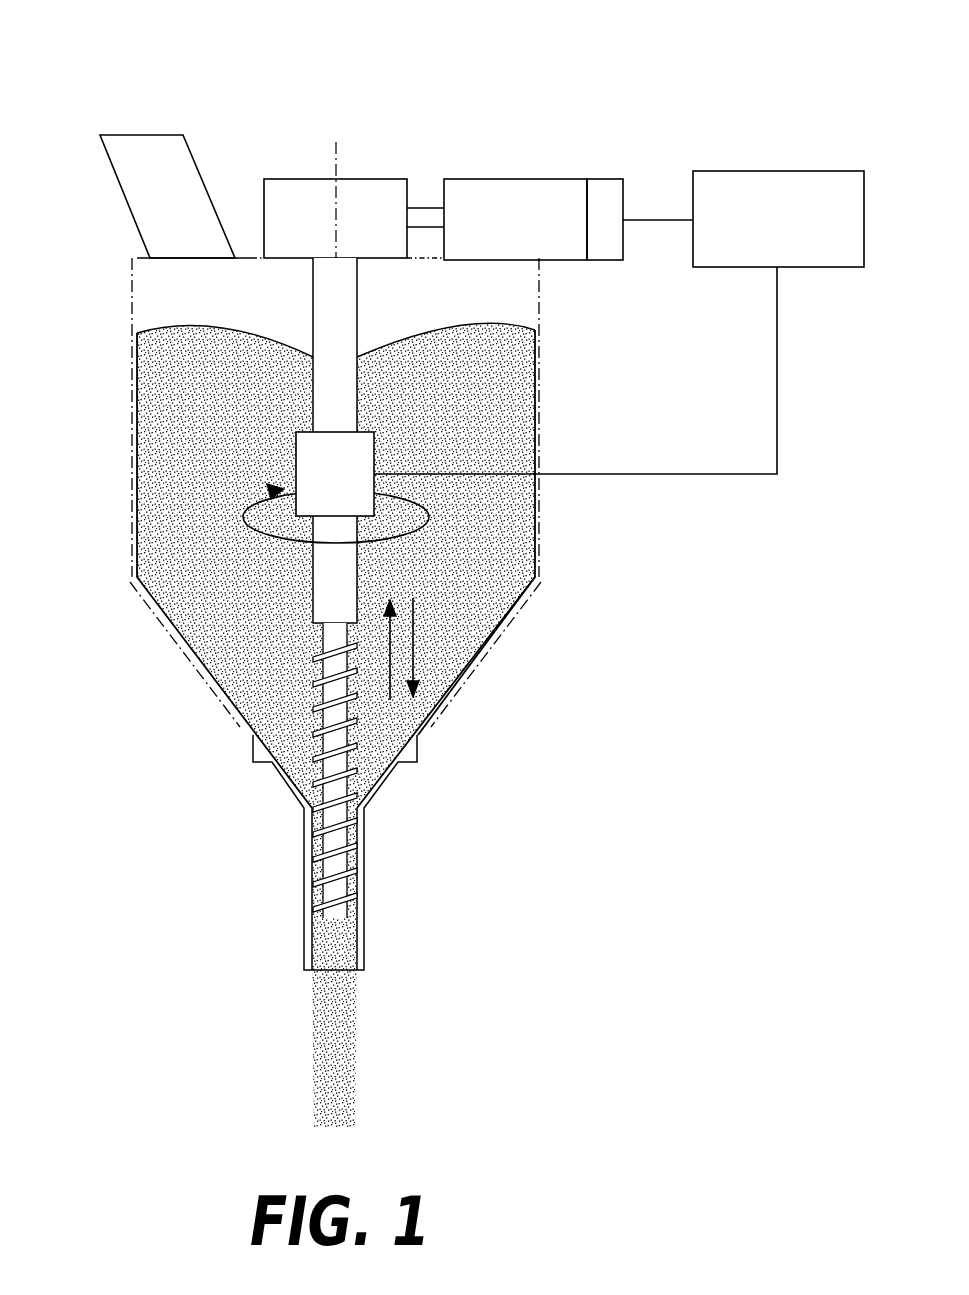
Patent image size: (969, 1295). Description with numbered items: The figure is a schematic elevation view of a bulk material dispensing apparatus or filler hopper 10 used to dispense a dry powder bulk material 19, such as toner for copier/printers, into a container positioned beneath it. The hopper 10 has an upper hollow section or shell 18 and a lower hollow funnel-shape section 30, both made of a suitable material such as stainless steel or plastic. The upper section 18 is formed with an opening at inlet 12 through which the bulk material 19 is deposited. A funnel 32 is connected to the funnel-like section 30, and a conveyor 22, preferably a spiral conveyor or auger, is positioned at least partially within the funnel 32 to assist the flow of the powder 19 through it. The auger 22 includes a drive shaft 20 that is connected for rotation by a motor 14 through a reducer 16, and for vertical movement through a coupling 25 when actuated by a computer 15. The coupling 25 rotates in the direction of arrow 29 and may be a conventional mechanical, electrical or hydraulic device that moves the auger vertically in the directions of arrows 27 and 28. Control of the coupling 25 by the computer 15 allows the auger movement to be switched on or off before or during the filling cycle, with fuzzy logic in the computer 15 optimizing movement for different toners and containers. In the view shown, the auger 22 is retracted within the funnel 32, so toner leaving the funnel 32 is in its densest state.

The filler hopper 10 is at (450, 108).
The inlet 12 is at (140, 134).
The motor 14 is at (517, 178).
The computer 15 is at (777, 171).
The reducer 16 is at (300, 178).
The upper hollow section 18 is at (541, 348).
The bulk material 19 is at (165, 490).
The drive shaft 20 is at (313, 597).
The conveyor 22 is at (353, 860).
The coupling 25 is at (365, 453).
The arrow 27 is at (413, 667).
The arrow 28 is at (390, 653).
The arrow 29 is at (428, 517).
The lower funnel-shape section 30 is at (515, 598).
The funnel 32 is at (381, 787).